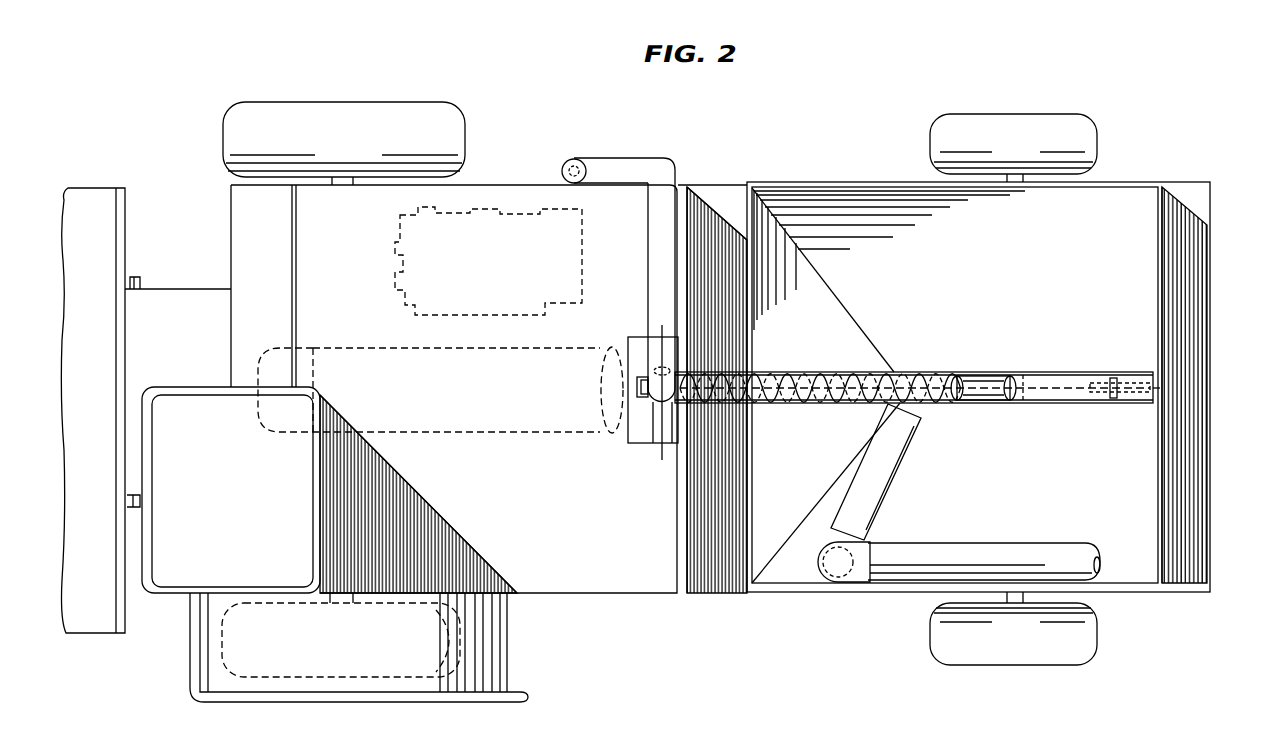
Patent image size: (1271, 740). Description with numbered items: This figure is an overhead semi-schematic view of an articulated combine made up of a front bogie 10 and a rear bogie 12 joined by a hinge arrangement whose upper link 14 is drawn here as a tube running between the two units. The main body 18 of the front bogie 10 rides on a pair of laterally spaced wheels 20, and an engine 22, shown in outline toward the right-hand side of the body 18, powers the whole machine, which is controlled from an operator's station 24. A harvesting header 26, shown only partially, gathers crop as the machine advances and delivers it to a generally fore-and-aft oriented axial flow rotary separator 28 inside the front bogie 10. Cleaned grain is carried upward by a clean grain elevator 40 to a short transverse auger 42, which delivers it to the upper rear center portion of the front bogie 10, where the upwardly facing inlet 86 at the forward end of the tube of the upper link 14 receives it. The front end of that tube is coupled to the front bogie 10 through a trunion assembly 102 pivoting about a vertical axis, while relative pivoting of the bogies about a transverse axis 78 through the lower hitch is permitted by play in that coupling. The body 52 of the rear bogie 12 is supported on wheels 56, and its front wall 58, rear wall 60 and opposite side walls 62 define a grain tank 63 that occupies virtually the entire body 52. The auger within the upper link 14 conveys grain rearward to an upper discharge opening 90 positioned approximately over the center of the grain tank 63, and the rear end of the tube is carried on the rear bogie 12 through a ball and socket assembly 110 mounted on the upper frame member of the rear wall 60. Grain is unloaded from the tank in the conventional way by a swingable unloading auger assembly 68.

The front bogie 10 is at (574, 637).
The rear bogie 12 is at (799, 627).
The upper link 14 is at (787, 412).
The main body 18 is at (200, 262).
The wheels 20 is at (287, 101).
The engine 22 is at (396, 255).
The operator's station 24 is at (282, 500).
The harvesting header 26 is at (103, 184).
The axial flow rotary separator 28 is at (446, 440).
The clean grain elevator 40 is at (582, 157).
The short transverse auger 42 is at (648, 282).
The body 52 is at (1228, 150).
The wheels 56 is at (1097, 136).
The front wall 58 is at (740, 488).
The rear wall 60 is at (1170, 465).
The side walls 62 is at (792, 183).
The grain tank 63 is at (1008, 479).
The swingable unloading auger assembly 68 is at (942, 543).
The transverse axis 78 is at (660, 453).
The inlet 86 is at (650, 372).
The upper discharge opening 90 is at (1020, 372).
The trunion assembly 102 is at (645, 415).
The ball and socket assembly 110 is at (1172, 368).